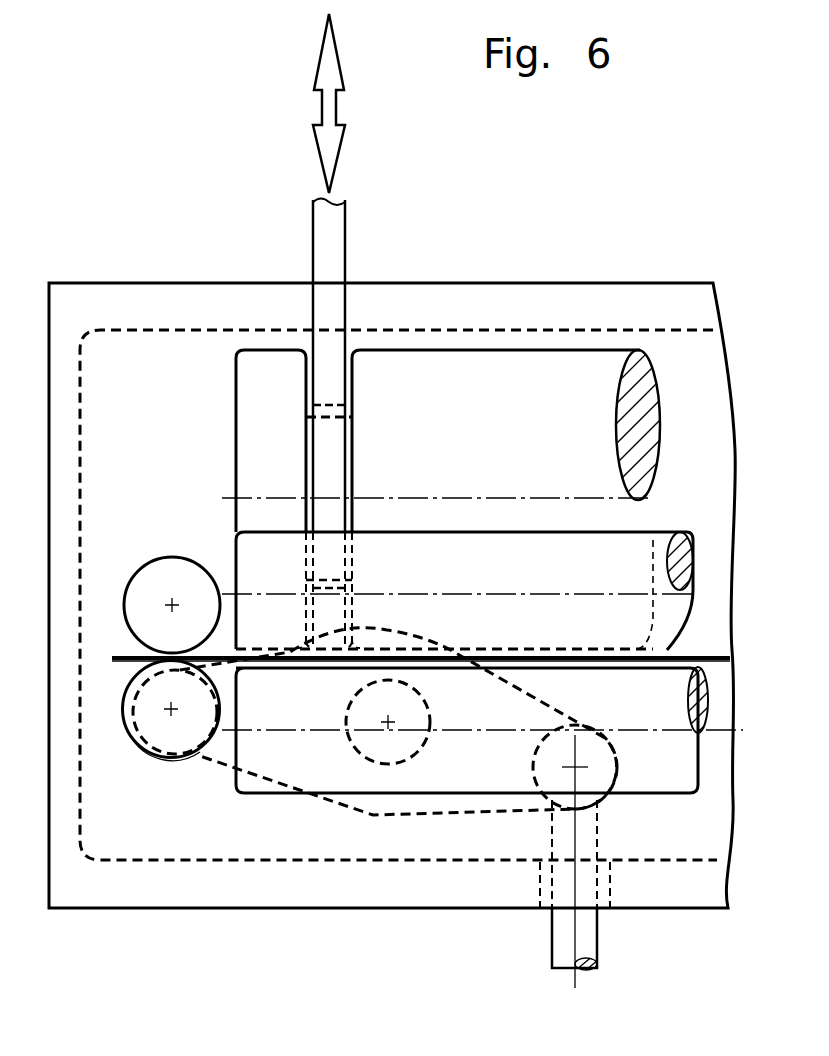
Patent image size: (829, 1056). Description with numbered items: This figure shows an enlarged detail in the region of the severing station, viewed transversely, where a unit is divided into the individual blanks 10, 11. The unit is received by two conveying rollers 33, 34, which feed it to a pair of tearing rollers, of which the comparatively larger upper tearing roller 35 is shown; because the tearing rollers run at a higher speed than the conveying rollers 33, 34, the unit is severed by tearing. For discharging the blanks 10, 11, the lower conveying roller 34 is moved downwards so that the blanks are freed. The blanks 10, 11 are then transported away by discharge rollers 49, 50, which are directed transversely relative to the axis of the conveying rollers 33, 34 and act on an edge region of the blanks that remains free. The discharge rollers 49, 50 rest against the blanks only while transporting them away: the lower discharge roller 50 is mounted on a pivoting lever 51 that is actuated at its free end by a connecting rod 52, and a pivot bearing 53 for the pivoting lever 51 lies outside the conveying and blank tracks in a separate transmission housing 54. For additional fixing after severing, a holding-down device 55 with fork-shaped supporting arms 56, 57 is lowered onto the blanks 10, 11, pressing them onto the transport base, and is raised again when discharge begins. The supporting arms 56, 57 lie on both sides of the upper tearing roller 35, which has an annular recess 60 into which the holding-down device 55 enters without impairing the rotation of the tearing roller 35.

The blank 10 is at (696, 657).
The blank 11 is at (437, 637).
The conveying roller 33 is at (653, 543).
The conveying roller 34 is at (683, 772).
The tearing roller 35 is at (553, 372).
The discharge roller 49 is at (152, 572).
The discharge roller 50 is at (148, 757).
The pivoting lever 51 is at (217, 765).
The connecting rod 52 is at (557, 942).
The pivot bearing 53 is at (375, 763).
The transmission housing 54 is at (159, 268).
The holding-down device 55 is at (365, 257).
The supporting arm 56 is at (317, 473).
The supporting arm 57 is at (292, 379).
The annular recess 60 is at (353, 378).